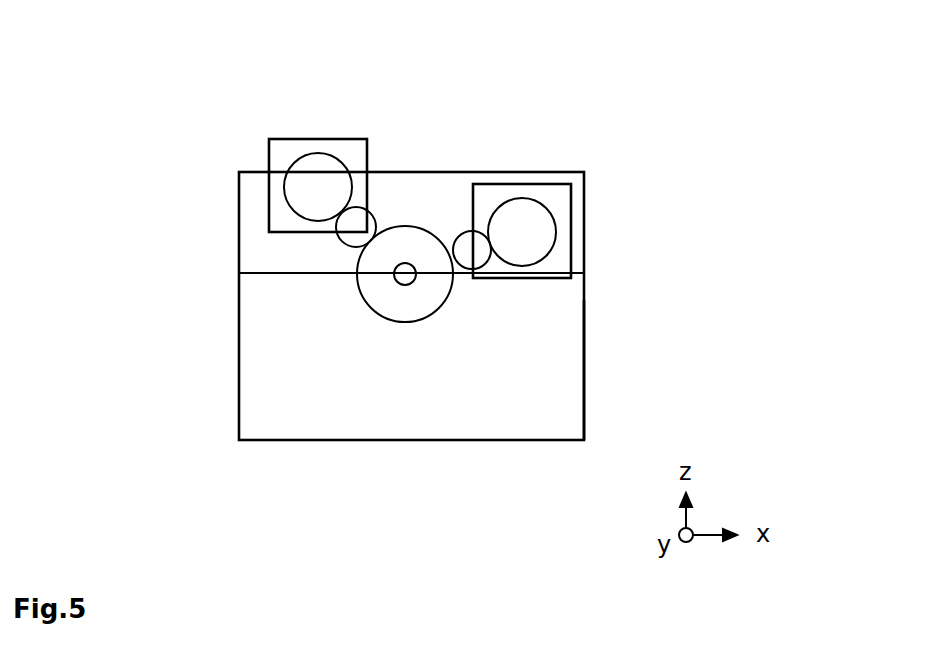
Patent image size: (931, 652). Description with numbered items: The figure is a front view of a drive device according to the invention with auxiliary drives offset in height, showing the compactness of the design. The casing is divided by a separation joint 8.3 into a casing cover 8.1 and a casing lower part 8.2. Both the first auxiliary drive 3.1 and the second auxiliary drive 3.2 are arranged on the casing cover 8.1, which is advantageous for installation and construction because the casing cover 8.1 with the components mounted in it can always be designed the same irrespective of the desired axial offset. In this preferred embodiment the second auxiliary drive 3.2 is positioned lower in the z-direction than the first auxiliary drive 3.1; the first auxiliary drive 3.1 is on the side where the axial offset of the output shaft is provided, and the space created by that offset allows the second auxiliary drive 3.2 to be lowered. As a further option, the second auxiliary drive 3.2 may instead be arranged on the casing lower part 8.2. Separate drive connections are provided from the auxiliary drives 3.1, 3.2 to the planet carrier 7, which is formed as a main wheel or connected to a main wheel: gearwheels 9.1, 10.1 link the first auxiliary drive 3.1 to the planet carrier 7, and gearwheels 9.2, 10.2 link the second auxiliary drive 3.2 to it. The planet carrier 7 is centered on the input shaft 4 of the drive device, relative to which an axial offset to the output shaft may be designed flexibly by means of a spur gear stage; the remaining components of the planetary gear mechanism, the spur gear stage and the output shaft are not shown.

The first auxiliary drive 3.1 is at (268, 209).
The second auxiliary drive 3.2 is at (571, 198).
The input shaft 4 is at (405, 285).
The planet carrier 7 is at (420, 225).
The casing cover 8.1 is at (584, 249).
The casing lower part 8.2 is at (584, 327).
The separation joint 8.3 is at (322, 273).
The gearwheel 9.1 is at (287, 165).
The gearwheel 9.2 is at (543, 198).
The gearwheel 10.1 is at (340, 242).
The gearwheel 10.2 is at (460, 232).